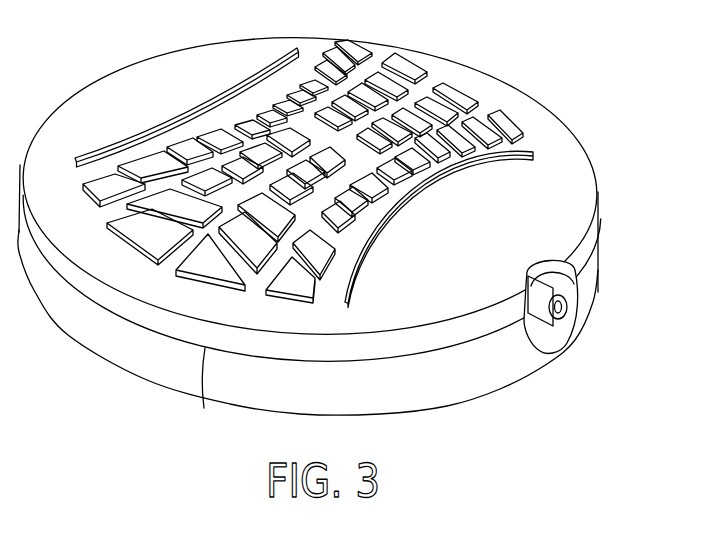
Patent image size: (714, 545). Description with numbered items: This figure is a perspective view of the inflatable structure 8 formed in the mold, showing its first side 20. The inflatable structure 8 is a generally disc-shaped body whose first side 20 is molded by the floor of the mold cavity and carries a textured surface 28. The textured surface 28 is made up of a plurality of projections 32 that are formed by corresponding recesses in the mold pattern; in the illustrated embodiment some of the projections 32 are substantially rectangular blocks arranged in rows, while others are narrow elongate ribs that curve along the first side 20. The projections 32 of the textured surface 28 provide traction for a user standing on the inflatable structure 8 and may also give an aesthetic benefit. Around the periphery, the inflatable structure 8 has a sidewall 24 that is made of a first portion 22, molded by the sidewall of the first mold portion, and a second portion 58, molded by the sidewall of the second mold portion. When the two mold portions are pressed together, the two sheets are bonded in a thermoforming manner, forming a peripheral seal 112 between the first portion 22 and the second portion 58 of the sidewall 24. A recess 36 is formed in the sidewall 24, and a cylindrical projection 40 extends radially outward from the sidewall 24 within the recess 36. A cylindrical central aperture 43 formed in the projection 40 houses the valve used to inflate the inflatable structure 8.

The inflatable structure 8 is at (330, 231).
The first side 20 is at (449, 283).
The first portion of sidewall 22 is at (118, 303).
The sidewall 24 is at (345, 400).
The textured surface 28 is at (442, 83).
The projections 32 is at (173, 122).
The recess 36 is at (545, 347).
The projection 40 is at (533, 278).
The central aperture 43 is at (563, 312).
The second portion of sidewall 58 is at (118, 360).
The peripheral seal 112 is at (205, 393).